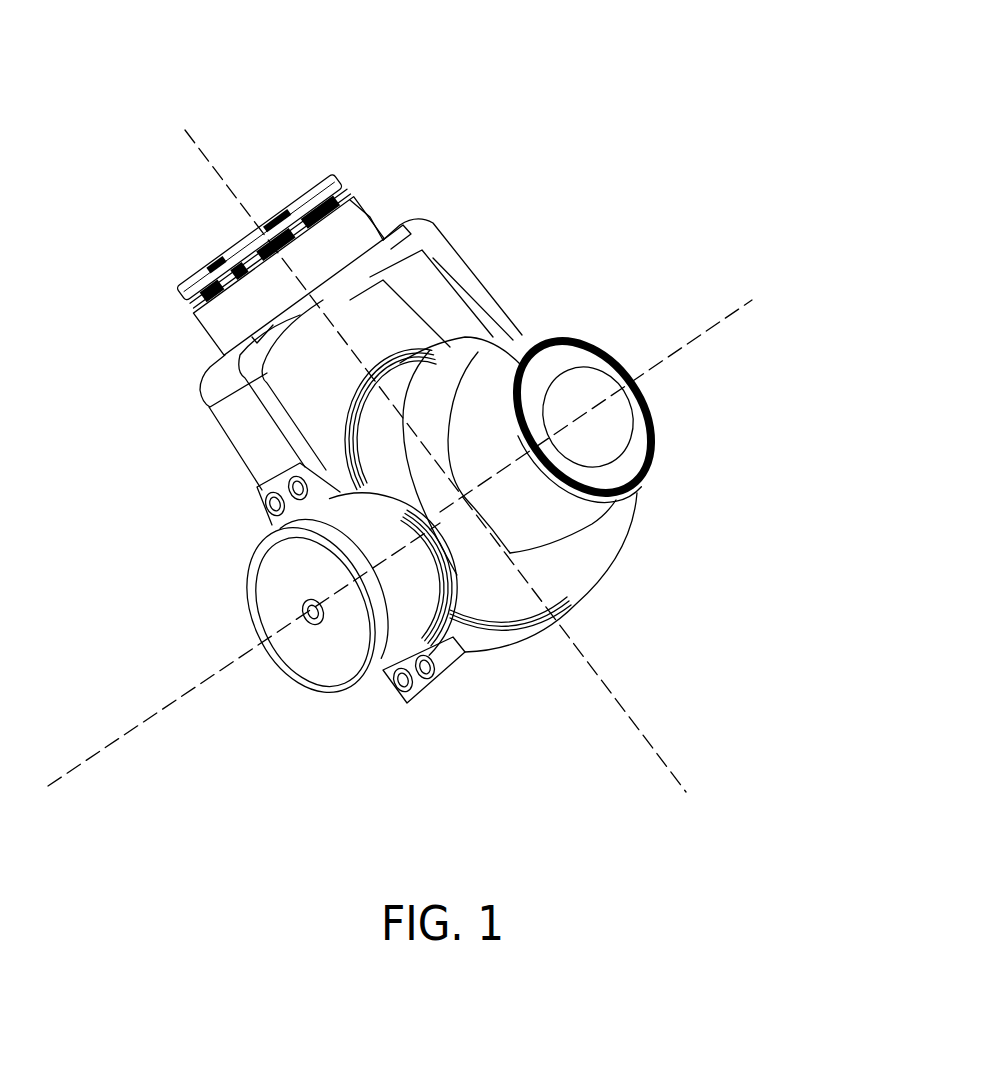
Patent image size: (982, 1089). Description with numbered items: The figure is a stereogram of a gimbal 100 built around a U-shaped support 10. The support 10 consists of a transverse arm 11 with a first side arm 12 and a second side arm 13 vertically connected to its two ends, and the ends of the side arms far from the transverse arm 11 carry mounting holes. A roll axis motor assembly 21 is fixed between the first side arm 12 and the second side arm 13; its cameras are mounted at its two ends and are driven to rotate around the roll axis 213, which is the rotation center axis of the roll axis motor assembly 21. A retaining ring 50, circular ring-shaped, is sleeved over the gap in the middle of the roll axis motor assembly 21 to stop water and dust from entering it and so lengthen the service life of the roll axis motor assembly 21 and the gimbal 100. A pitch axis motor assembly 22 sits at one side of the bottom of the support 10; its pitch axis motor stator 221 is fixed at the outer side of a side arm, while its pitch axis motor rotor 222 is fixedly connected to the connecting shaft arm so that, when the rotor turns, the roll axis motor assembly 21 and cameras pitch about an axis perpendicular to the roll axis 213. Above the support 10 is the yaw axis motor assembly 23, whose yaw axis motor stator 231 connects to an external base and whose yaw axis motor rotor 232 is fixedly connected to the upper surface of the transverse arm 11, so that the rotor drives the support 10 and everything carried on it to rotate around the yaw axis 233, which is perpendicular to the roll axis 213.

The gimbal 100 is at (470, 826).
The support 10 is at (574, 190).
The transverse arm 11 is at (383, 265).
The first side arm 12 is at (428, 283).
The second side arm 13 is at (468, 300).
The roll axis motor assembly 21 is at (577, 560).
The roll axis 213 is at (703, 333).
The pitch axis motor assembly 22 is at (98, 480).
The pitch axis motor stator 221 is at (258, 490).
The pitch axis motor rotor 222 is at (272, 577).
The yaw axis motor assembly 23 is at (553, 26).
The yaw axis motor stator 231 is at (335, 240).
The yaw axis motor rotor 232 is at (370, 268).
The yaw axis 233 is at (215, 163).
The retaining ring 50 is at (346, 424).